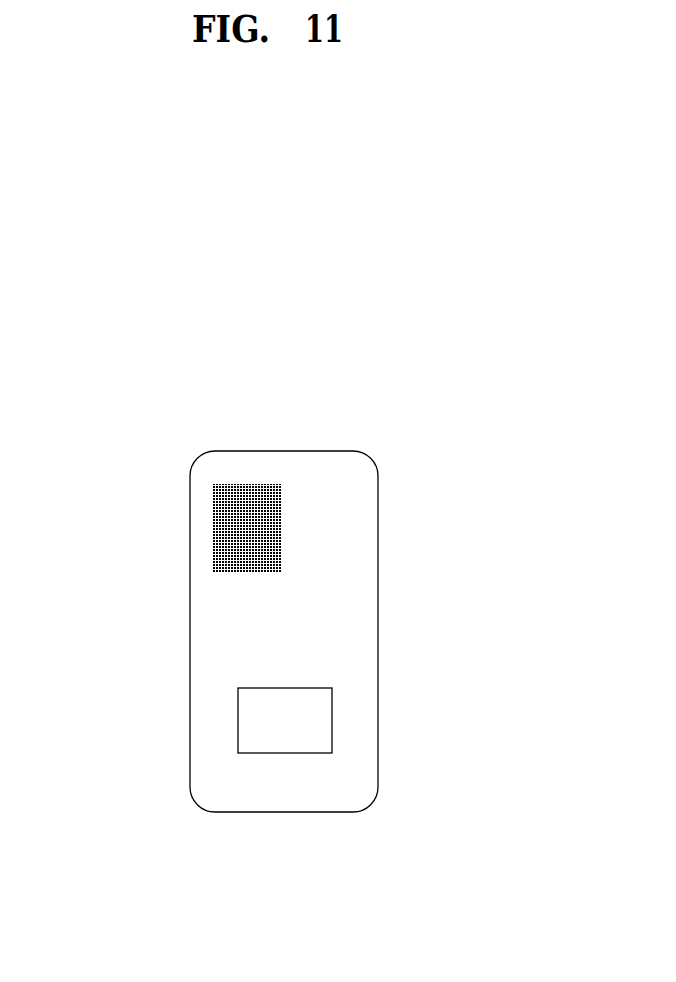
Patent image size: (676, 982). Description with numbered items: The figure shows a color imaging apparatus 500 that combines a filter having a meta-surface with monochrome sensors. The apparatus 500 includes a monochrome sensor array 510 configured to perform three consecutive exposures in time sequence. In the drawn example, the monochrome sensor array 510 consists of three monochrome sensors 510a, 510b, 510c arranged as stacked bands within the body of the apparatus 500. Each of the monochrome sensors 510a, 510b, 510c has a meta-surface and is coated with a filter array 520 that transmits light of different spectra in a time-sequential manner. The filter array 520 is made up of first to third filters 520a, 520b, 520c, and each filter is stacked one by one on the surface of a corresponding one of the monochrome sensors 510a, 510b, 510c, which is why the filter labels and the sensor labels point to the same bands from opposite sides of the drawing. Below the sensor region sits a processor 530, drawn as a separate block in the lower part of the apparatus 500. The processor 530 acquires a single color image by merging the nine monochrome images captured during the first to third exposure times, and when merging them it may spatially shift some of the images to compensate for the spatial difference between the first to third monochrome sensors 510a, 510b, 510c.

The color imaging apparatus 500 is at (389, 436).
The monochrome sensor array 510 is at (460, 492).
The first monochrome sensor 510a is at (281, 507).
The second monochrome sensor 510b is at (281, 531).
The third monochrome sensor 510c is at (281, 560).
The filter array 520 is at (105, 492).
The first filter 520a is at (213, 501).
The second filter 520b is at (213, 530).
The third filter 520c is at (213, 559).
The processor 530 is at (238, 720).